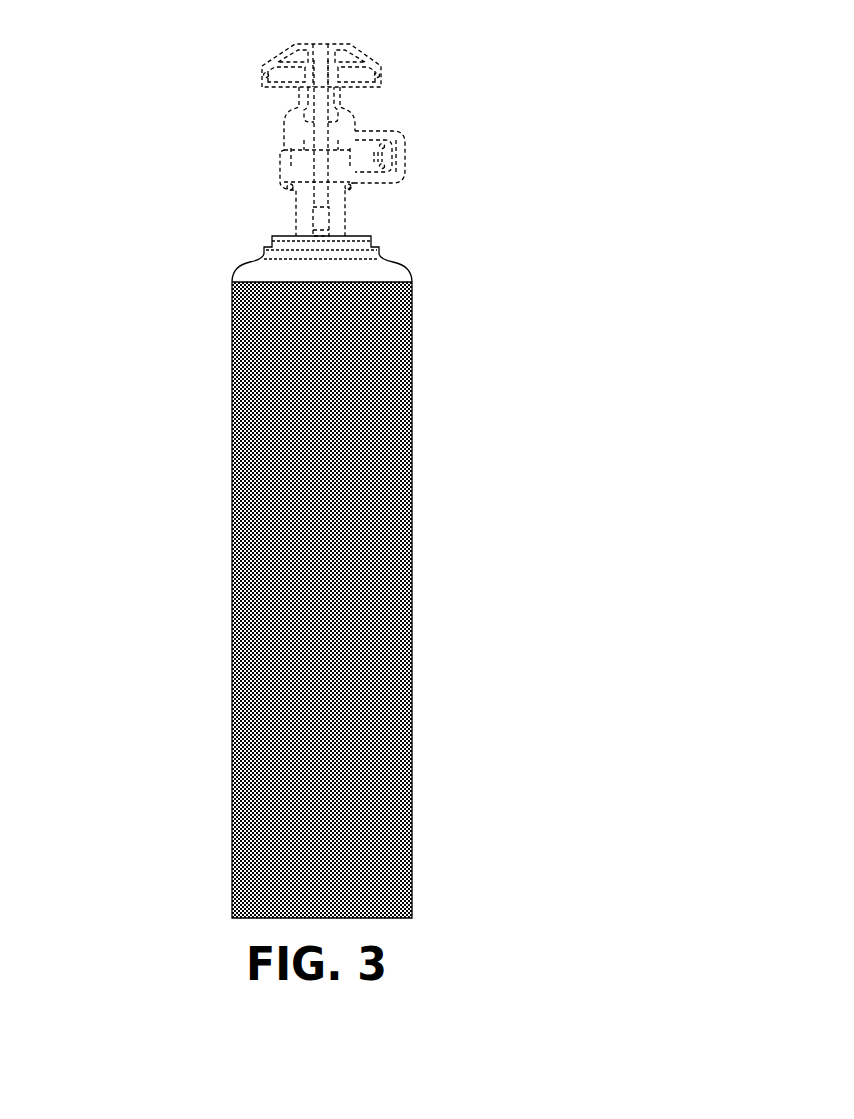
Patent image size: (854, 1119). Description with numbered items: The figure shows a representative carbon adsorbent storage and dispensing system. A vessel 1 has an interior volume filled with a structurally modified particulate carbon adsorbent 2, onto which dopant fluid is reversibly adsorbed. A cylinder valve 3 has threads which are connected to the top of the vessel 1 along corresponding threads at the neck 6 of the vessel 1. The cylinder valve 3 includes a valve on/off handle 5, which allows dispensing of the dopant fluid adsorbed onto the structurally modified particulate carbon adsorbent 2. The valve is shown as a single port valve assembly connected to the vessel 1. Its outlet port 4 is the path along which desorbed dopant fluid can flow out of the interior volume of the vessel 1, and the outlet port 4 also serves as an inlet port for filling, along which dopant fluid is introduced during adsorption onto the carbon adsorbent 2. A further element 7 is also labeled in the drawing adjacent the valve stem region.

The vessel 1 is at (444, 480).
The structurally modified particulate carbon adsorbent 2 is at (378, 622).
The cylinder valve 3 is at (184, 114).
The outlet port 4 is at (452, 158).
The valve on/off handle 5 is at (413, 46).
The neck 6 is at (246, 228).
The valve stem 7 is at (374, 226).